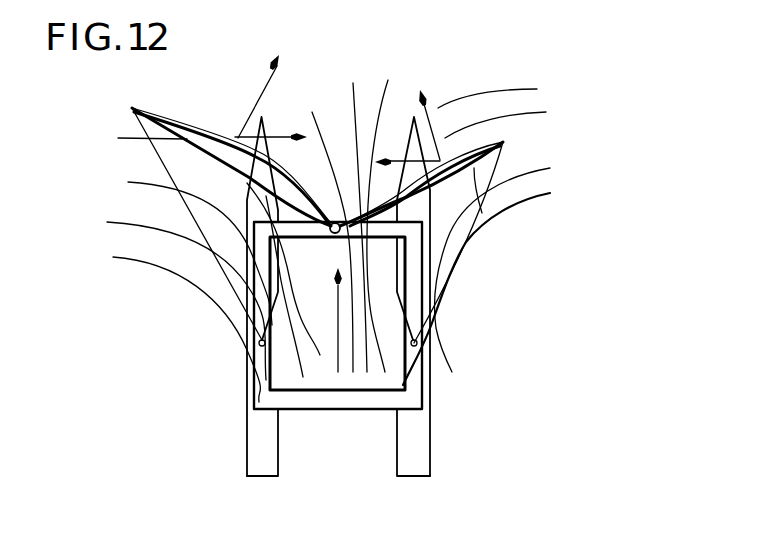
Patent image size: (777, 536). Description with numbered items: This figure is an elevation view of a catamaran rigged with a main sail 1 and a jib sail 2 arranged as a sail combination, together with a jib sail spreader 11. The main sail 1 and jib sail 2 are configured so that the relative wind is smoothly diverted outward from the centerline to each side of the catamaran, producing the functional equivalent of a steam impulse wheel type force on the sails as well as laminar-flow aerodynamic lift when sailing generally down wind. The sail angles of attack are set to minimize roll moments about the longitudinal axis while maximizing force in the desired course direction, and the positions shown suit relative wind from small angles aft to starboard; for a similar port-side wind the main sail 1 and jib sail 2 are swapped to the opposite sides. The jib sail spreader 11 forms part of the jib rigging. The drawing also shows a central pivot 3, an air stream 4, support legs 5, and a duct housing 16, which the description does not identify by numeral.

The main sail 1 is at (210, 123).
The jib sail 2 is at (479, 148).
The pivot 3 is at (329, 235).
The air stream 4 is at (196, 152).
The support legs 5 is at (246, 436).
The jib sail spreader 11 is at (479, 212).
The duct housing 16 is at (321, 410).